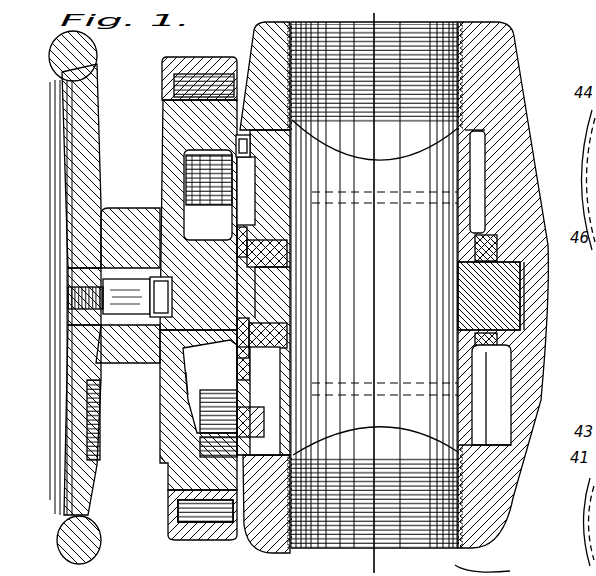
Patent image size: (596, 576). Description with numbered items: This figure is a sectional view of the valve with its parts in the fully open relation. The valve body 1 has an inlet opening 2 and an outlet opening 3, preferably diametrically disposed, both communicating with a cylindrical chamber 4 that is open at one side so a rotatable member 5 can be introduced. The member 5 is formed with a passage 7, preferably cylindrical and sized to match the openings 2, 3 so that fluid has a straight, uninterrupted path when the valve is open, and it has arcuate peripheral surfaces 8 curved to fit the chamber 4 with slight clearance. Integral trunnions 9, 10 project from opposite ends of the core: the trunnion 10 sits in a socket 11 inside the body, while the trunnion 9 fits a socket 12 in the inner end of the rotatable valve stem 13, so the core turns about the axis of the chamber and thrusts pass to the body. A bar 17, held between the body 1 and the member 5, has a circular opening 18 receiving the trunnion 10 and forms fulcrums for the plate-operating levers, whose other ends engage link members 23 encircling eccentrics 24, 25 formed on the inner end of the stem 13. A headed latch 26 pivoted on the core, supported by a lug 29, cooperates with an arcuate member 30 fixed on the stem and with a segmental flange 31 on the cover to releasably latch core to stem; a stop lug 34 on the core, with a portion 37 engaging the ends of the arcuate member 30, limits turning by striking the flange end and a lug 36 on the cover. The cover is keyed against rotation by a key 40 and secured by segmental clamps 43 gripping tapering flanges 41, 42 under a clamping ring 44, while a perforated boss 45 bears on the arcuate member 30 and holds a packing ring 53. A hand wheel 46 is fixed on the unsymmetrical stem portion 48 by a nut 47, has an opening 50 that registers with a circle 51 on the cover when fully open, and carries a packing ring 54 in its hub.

The valve body 1 is at (498, 55).
The opening 2 is at (474, 25).
The opening 3 is at (250, 573).
The cylindrical chamber 4 is at (236, 130).
The rotatable member 5 is at (352, 13).
The passage 7 is at (452, 319).
The arcuate peripheral surfaces 8 is at (456, 130).
The trunnion 9 is at (279, 296).
The trunnion 10 is at (515, 281).
The socket 11 is at (522, 334).
The socket 12 is at (275, 263).
The valve stem 13 is at (157, 241).
The bar 17 is at (487, 348).
The circular opening 18 is at (477, 258).
The link members 23 is at (260, 240).
The eccentric 24 is at (238, 362).
The eccentric 25 is at (263, 340).
The headed latch 26 is at (262, 405).
The lug 29 is at (266, 426).
The arcuate member 30 is at (237, 231).
The segmental flange 31 is at (251, 380).
The stop lug 34 is at (243, 230).
The lug 36 is at (247, 128).
The portion 37 is at (172, 146).
The key 40 is at (175, 89).
The tapering annular flange 41 is at (180, 470).
The tapering annular flange 42 is at (206, 522).
The segmental clamps 43 is at (193, 60).
The clamping ring 44 is at (181, 533).
The perforated boss 45 is at (193, 348).
The hand wheel 46 is at (95, 550).
The nut 47 is at (70, 323).
The portion of the valve stem 48 is at (130, 316).
The opening 50 is at (93, 428).
The circle 51 is at (162, 458).
The packing ring 53 is at (226, 350).
The packing ring 54 is at (158, 322).